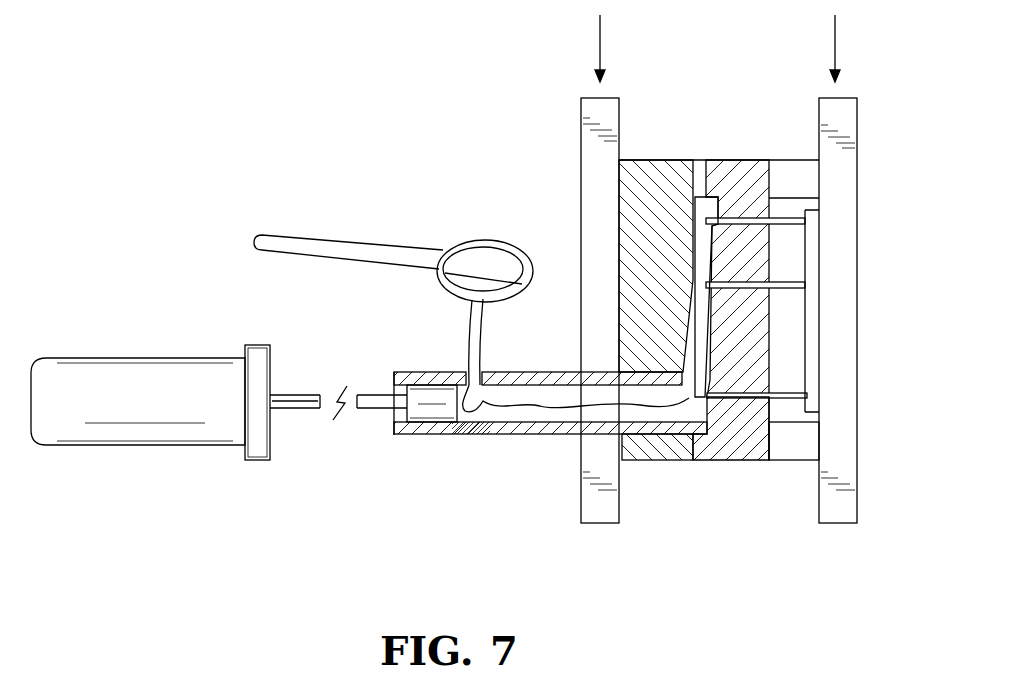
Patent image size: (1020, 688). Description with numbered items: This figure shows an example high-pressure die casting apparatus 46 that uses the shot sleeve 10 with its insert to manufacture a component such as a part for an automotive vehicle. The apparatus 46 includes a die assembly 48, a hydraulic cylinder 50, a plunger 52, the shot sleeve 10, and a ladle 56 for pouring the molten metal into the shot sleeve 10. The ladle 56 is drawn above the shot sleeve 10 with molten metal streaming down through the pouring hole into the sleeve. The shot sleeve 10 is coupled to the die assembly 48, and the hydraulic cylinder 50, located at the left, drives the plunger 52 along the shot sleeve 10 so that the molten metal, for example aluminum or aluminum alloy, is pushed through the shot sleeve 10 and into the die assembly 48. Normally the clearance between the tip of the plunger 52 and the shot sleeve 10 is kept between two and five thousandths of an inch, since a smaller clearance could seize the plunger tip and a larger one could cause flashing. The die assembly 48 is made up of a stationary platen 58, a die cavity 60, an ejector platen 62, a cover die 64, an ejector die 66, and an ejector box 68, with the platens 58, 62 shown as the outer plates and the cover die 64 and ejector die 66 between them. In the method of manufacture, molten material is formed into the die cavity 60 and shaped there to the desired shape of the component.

The shot sleeve 10 is at (528, 368).
The high-pressure die casting apparatus 46 is at (893, 165).
The die assembly 48 is at (870, 412).
The hydraulic cylinder 50 is at (155, 378).
The plunger 52 is at (377, 393).
The ladle 56 is at (483, 258).
The stationary platen 58 is at (598, 114).
The die cavity 60 is at (702, 197).
The ejector platen 62 is at (843, 117).
The cover die 64 is at (668, 452).
The ejector die 66 is at (722, 452).
The ejector box 68 is at (807, 445).